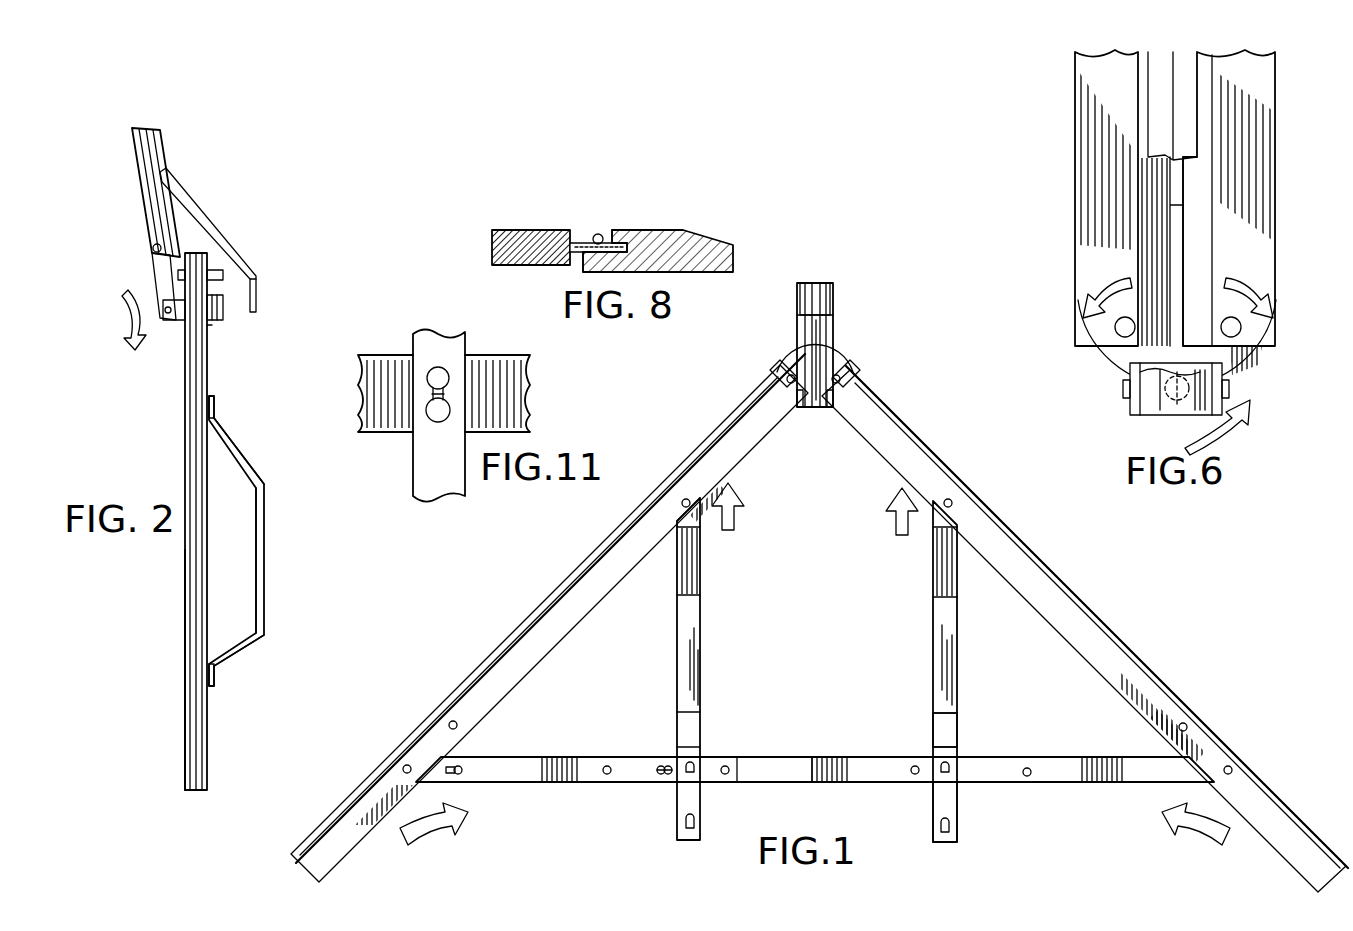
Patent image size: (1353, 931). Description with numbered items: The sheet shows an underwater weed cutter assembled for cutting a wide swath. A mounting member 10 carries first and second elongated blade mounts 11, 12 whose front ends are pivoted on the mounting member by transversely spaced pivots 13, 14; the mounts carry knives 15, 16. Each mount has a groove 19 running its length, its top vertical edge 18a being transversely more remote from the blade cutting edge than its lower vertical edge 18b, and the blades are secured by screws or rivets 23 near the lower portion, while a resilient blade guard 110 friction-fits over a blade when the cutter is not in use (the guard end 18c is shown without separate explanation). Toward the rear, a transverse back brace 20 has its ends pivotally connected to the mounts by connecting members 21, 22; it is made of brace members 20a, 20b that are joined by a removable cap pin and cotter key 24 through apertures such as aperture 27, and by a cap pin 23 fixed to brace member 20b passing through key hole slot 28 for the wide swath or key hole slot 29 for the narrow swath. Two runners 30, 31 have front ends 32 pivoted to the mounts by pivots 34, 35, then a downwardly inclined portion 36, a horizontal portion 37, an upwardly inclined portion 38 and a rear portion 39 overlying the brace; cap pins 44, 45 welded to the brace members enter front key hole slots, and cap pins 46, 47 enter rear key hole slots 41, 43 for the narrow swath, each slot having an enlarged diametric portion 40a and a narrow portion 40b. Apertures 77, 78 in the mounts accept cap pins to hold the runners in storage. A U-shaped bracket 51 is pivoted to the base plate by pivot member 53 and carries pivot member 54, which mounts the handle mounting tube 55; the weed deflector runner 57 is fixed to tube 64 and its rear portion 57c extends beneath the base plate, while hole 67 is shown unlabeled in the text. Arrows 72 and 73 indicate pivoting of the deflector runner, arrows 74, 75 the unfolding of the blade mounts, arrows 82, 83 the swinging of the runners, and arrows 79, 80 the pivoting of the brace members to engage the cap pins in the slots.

In FIG. 1, the mounting member 10 is at (790, 345).
In FIG. 2, the mounting member 10 is at (214, 316).
In FIG. 11, the mounting member 10 is at (416, 312).
In FIG. 6, the mounting member 10 is at (1262, 365).
In FIG. 1, the first elongated blade mount 11 is at (562, 624).
In FIG. 1, the second elongated blade mount 12 is at (1112, 650).
In FIG. 2, the second elongated blade mount 12 is at (188, 580).
In FIG. 1, the pivot 13 is at (780, 368).
In FIG. 6, the pivot 13 is at (1115, 327).
In FIG. 1, the pivot 14 is at (846, 369).
In FIG. 2, the pivot 14 is at (224, 275).
In FIG. 6, the pivot 14 is at (1243, 327).
In FIG. 1, the knife 15 is at (572, 592).
In FIG. 1, the knife 16 is at (1074, 592).
In FIG. 2, the knife 16 is at (190, 480).
In FIG. 8, the top vertical edge 18a is at (612, 235).
In FIG. 8, the lower vertical edge 18b is at (583, 262).
In FIG. 8, the connector tapered end 18c is at (735, 240).
In FIG. 8, the groove 19 is at (626, 240).
In FIG. 1, the back brace 20 is at (795, 782).
In FIG. 8, the back brace 20 is at (490, 244).
In FIG. 1, the brace member 20a is at (517, 776).
In FIG. 11, the brace member 20a is at (390, 370).
In FIG. 1, the brace member 20b is at (811, 764).
In FIG. 2, the brace member 20b is at (214, 675).
In FIG. 1, the connecting member 21 is at (403, 768).
In FIG. 1, the connecting member 22 is at (1233, 767).
In FIG. 6, the connecting member 22 is at (1200, 205).
In FIG. 1, the cap pin 23 is at (663, 765).
In FIG. 8, the cap pin 23 is at (596, 234).
In FIG. 1, the cap pin and cotter key 24 is at (727, 776).
In FIG. 1, the aperture 27 is at (913, 766).
In FIG. 1, the key hole slot 28 is at (660, 776).
In FIG. 1, the key hole slot 29 is at (459, 777).
In FIG. 1, the runner 30 is at (702, 619).
In FIG. 1, the runner 31 is at (931, 619).
In FIG. 2, the runner 31 is at (268, 517).
In FIG. 1, the front end 32 is at (700, 522).
In FIG. 2, the front end 32 is at (215, 408).
In FIG. 1, the pivot 34 is at (683, 500).
In FIG. 1, the pivot 35 is at (953, 500).
In FIG. 1, the downwardly and rearwardly inclined portion 36 is at (700, 568).
In FIG. 2, the downwardly and rearwardly inclined portion 36 is at (245, 455).
In FIG. 1, the horizontal portion 37 is at (690, 633).
In FIG. 2, the horizontal portion 37 is at (262, 562).
In FIG. 1, the upwardly and rearwardly inclined portion 38 is at (957, 722).
In FIG. 2, the upwardly and rearwardly inclined portion 38 is at (240, 650).
In FIG. 1, the rear portion 39 is at (957, 802).
In FIG. 11, the rear portion 39 is at (430, 475).
In FIG. 11, the diametric portion 40a is at (452, 372).
In FIG. 11, the narrow portion 40b is at (450, 395).
In FIG. 1, the rear key hole slot 41 is at (686, 830).
In FIG. 1, the key hole slot 43 is at (952, 830).
In FIG. 1, the cap pin 44 is at (696, 768).
In FIG. 11, the cap pin 44 is at (433, 412).
In FIG. 1, the cap pin 45 is at (942, 776).
In FIG. 1, the cap pin 46 is at (605, 776).
In FIG. 1, the cap pin 47 is at (1027, 767).
In FIG. 2, the U-shaped bracket 51 is at (175, 322).
In FIG. 6, the U-shaped bracket 51 is at (1133, 405).
In FIG. 2, the pivot member 53 is at (224, 310).
In FIG. 6, the pivot member 53 is at (1165, 413).
In FIG. 6, the pivot member 54 is at (1123, 388).
In FIG. 1, the handle mounting tube 55 is at (822, 352).
In FIG. 6, the handle mounting tube 55 is at (1162, 418).
In FIG. 1, the weed deflector runner 57 is at (833, 328).
In FIG. 2, the weed deflector runner 57 is at (188, 190).
In FIG. 2, the guard rear portion 57c is at (257, 295).
In FIG. 1, the tube 64 is at (828, 300).
In FIG. 2, the tube 64 is at (145, 178).
In FIG. 2, the pivot hole 67 is at (153, 250).
In FIG. 2, the arrow 72 is at (127, 315).
In FIG. 6, the arrow 73 is at (1232, 430).
In FIG. 6, the arrow 74 is at (1082, 276).
In FIG. 6, the arrow 75 is at (1268, 290).
In FIG. 1, the aperture 77 is at (450, 722).
In FIG. 1, the aperture 78 is at (1188, 727).
In FIG. 1, the arrow 79 is at (428, 843).
In FIG. 1, the arrow 80 is at (1205, 843).
In FIG. 1, the arrow 82 is at (735, 514).
In FIG. 1, the arrow 83 is at (895, 516).
In FIG. 8, the blade guard 110 is at (500, 230).
In FIG. 6, the blade guard 110 is at (1165, 65).